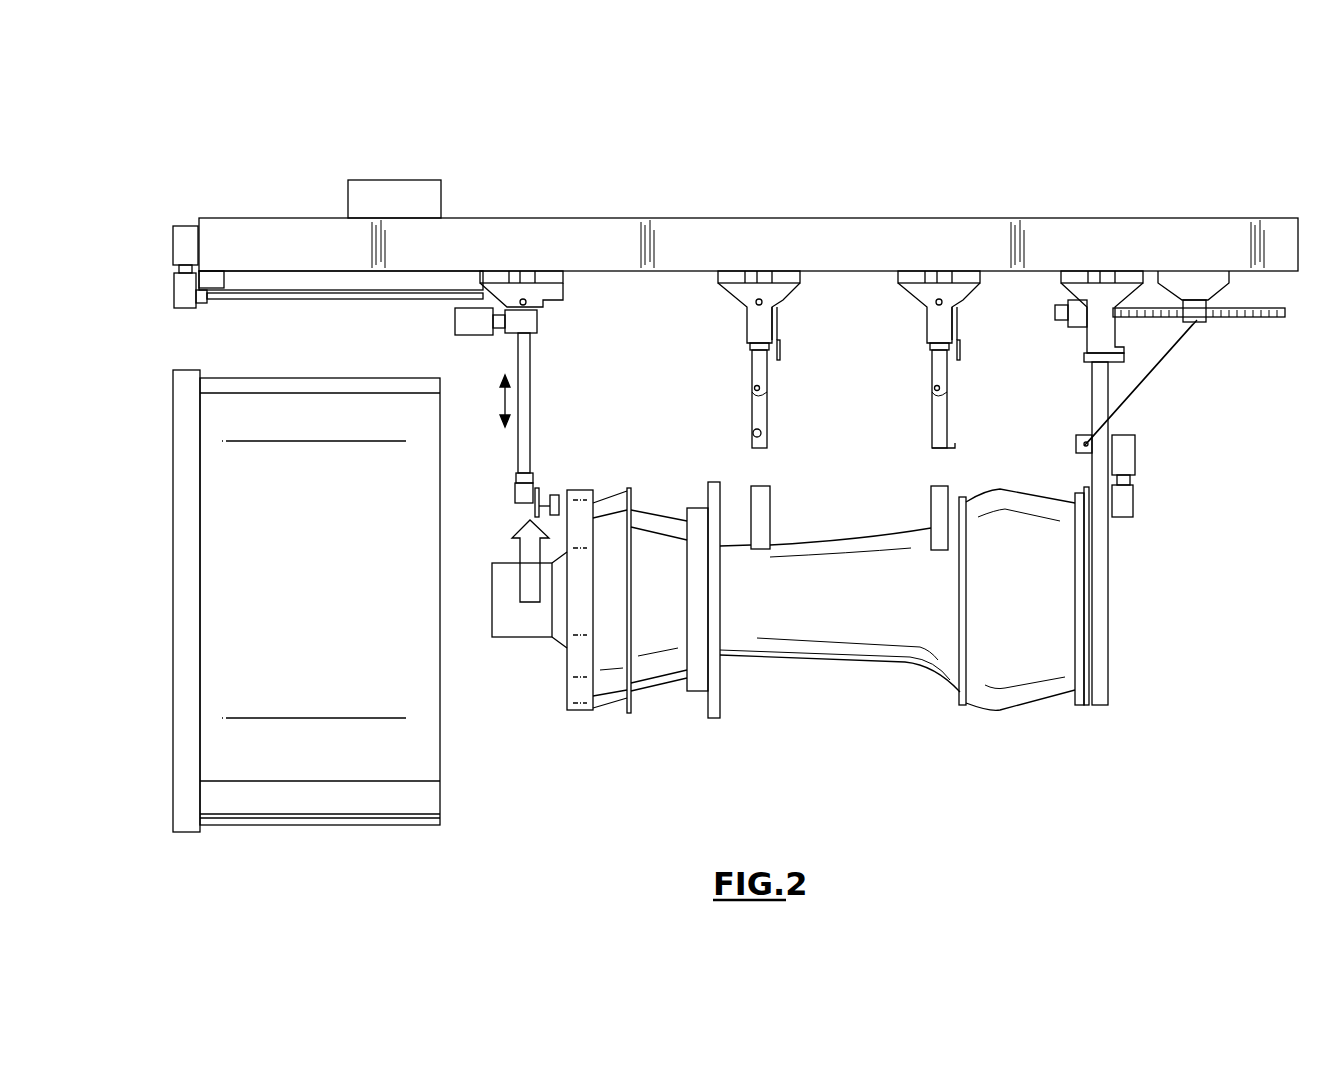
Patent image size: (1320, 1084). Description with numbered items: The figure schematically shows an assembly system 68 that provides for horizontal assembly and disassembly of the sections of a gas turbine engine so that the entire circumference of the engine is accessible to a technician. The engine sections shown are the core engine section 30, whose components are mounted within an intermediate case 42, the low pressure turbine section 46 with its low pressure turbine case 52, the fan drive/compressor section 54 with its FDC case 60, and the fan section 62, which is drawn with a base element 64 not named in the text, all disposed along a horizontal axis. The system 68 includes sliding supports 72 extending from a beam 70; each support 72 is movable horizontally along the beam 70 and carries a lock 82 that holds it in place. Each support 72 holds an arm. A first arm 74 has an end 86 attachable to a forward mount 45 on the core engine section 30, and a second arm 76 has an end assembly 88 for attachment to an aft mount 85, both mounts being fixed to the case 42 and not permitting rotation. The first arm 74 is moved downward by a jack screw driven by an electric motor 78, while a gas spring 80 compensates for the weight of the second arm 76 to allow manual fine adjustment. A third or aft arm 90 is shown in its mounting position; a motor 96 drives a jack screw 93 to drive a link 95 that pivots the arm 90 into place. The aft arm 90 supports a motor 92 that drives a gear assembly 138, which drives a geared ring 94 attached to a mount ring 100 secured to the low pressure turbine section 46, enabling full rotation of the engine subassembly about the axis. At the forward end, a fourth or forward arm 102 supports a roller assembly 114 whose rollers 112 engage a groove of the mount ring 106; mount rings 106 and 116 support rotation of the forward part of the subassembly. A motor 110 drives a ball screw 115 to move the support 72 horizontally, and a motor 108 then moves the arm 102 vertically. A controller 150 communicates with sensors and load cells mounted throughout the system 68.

The assembly system 68 is at (1128, 165).
The beam 70 is at (530, 235).
The controller 150 is at (376, 212).
The motor 110 is at (182, 290).
The ball screw 115 is at (302, 296).
The lock 82 is at (549, 280).
The sliding supports 72 is at (535, 305).
The motor 108 is at (470, 330).
The forward arm 102 is at (523, 385).
The roller assembly 114 is at (507, 495).
The rollers 112 is at (548, 495).
The mount ring 106 is at (580, 684).
The fan drive/compressor (FDC) section 54 is at (644, 756).
The FDC case 60 is at (660, 665).
The core engine section 30 is at (840, 630).
The intermediate case 42 is at (838, 630).
The forward mount 45 is at (760, 512).
The aft mount 85 is at (935, 505).
The low pressure turbine section 46 is at (1024, 623).
The low pressure turbine case 52 is at (1048, 680).
The mount ring 100 is at (1082, 643).
The geared ring 94 is at (1102, 582).
The aft arm 90 is at (1100, 529).
The motor 96 is at (1078, 320).
The jack screw 93 is at (1152, 318).
The link 95 is at (1143, 373).
The motor 92 is at (1130, 455).
The gear assembly 138 is at (1125, 503).
The electric motor 78 is at (782, 327).
The first arm 74 is at (752, 378).
The end 86 is at (752, 420).
The gas spring 80 is at (902, 325).
The second arm 76 is at (932, 378).
The end assembly 88 is at (932, 420).
The fan section 62 is at (274, 642).
The mount ring 116 is at (182, 752).
The base 64 is at (293, 845).